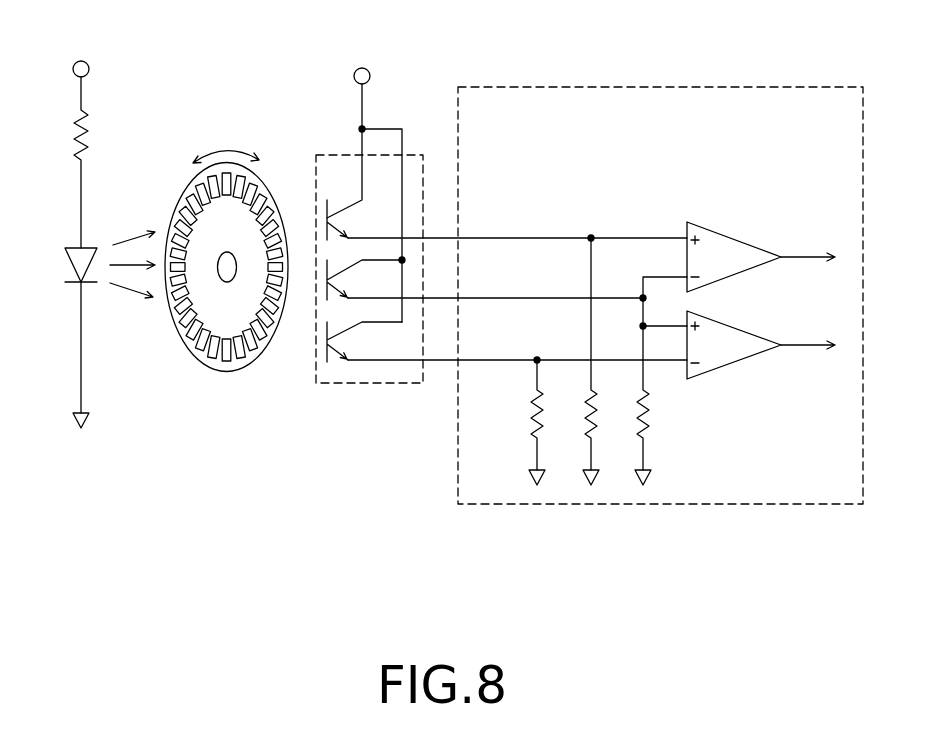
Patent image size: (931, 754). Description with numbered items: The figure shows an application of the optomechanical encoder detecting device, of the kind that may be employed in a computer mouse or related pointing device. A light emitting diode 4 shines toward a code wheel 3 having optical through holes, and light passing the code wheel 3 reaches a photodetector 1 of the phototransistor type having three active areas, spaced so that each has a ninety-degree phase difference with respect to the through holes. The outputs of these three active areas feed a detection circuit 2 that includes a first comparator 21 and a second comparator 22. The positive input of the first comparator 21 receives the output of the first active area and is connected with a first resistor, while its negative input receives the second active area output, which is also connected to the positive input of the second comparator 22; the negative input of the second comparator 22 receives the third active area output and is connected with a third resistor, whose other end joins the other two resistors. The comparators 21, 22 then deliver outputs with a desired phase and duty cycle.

The photodetector 1 is at (415, 167).
The detection circuit 2 is at (605, 256).
The code wheel 3 is at (231, 370).
The light emitting diode 4 is at (81, 282).
The first comparator 21 is at (730, 247).
The second comparator 22 is at (743, 350).